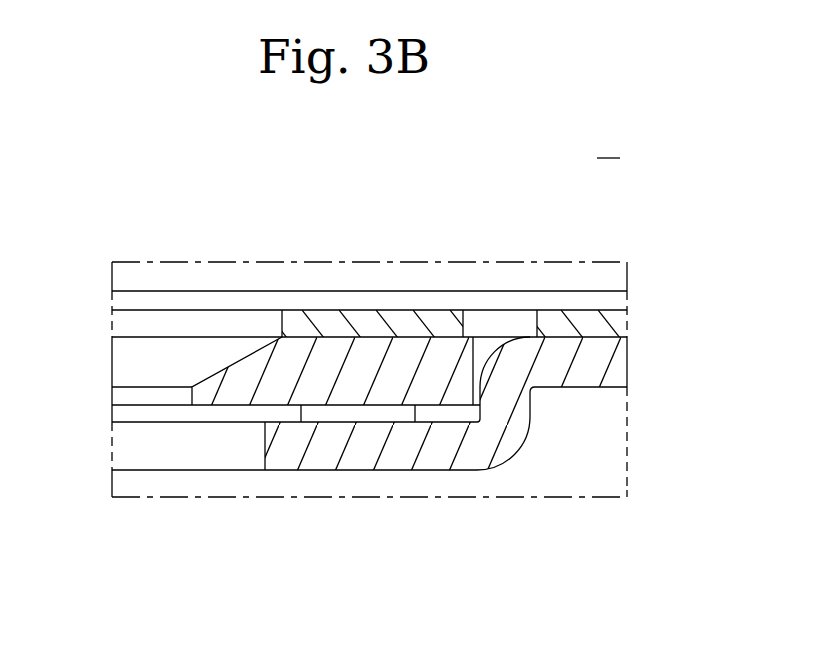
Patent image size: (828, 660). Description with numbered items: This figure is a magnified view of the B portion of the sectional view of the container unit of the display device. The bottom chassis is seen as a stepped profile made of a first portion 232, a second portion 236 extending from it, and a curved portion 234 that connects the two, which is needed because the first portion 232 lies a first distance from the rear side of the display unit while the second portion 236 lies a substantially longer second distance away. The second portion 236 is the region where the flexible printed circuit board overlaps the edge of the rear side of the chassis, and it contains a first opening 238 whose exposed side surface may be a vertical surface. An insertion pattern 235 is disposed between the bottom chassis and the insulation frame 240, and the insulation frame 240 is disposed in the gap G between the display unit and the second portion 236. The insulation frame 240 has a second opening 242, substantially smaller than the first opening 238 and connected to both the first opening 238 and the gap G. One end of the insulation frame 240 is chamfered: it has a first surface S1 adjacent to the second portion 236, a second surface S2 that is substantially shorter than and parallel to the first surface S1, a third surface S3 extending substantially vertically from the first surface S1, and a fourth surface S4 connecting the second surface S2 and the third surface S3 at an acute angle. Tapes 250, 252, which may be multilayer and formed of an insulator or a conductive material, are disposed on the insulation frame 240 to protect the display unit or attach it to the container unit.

The B portion B is at (608, 146).
The first portion 232 is at (617, 361).
The curved portion 234 is at (502, 443).
The insertion pattern 235 is at (380, 412).
The second portion 236 is at (320, 447).
The first opening 238 is at (127, 448).
The insulation frame 240 is at (441, 382).
The second opening 242 is at (127, 396).
The tape 250 is at (413, 320).
The tape 252 is at (263, 298).
The gap G is at (127, 357).
The first surface S1 is at (232, 405).
The second surface S2 is at (345, 333).
The third surface S3 is at (191, 394).
The fourth surface S4 is at (228, 366).